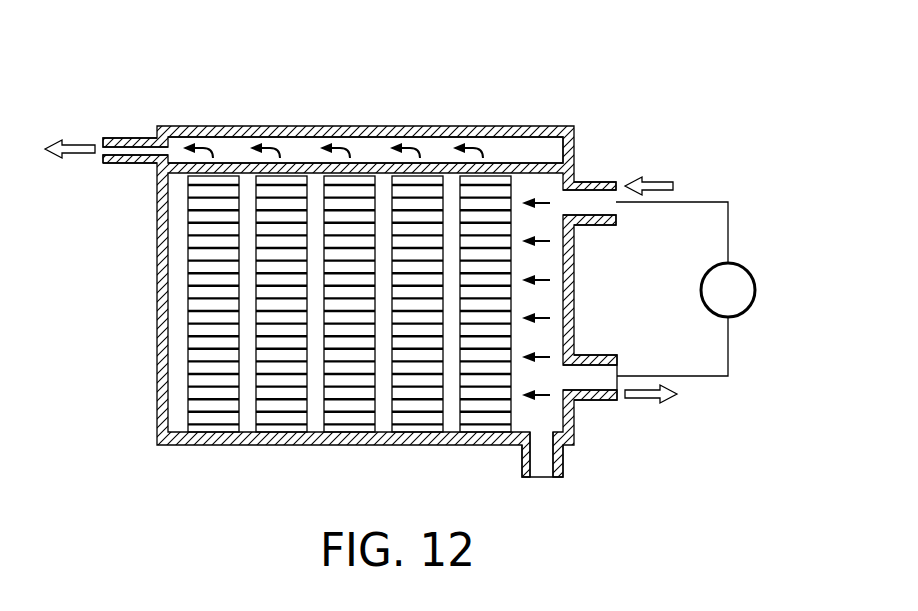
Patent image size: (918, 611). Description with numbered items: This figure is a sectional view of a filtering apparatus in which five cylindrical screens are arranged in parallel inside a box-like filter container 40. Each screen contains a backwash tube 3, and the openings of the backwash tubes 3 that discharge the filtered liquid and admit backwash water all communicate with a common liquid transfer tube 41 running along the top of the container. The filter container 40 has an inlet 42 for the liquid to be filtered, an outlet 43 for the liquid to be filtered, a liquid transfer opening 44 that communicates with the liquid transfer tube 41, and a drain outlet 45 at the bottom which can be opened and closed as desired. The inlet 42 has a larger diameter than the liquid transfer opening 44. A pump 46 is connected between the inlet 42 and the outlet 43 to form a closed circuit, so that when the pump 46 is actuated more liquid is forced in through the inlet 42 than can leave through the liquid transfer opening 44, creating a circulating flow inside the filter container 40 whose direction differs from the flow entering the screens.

The filter container 40 is at (612, 106).
The liquid transfer tube 41 is at (373, 138).
The inlet for the liquid to be filtered 42 is at (585, 203).
The outlet for the liquid to be filtered 43 is at (585, 378).
The liquid transfer opening 44 is at (137, 138).
The drain outlet 45 is at (547, 460).
The pump 46 is at (748, 307).
The backwash tube 3 is at (188, 268).